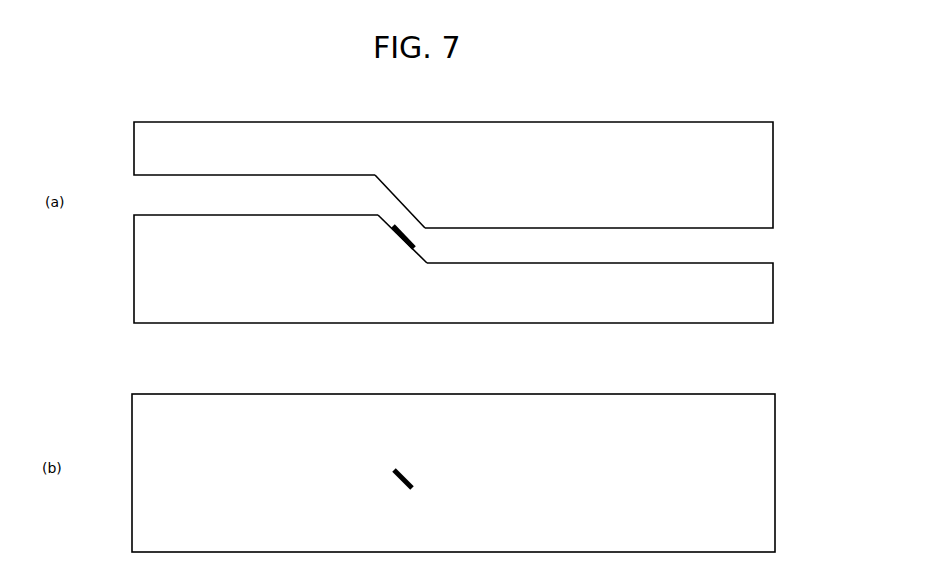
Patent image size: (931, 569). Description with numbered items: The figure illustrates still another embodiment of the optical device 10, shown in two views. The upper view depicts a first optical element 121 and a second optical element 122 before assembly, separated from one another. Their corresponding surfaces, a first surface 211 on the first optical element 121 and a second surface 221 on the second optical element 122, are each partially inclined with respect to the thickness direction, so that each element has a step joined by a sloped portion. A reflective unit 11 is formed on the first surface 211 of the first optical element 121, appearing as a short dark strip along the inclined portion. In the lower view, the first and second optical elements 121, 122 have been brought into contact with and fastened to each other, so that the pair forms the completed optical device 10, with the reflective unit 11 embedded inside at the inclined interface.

The optical device 10 is at (775, 447).
The reflective unit 11 is at (407, 233).
The first optical element 121 is at (131, 293).
The second optical element 122 is at (634, 121).
The first surface 211 is at (420, 254).
The second surface 221 is at (375, 177).